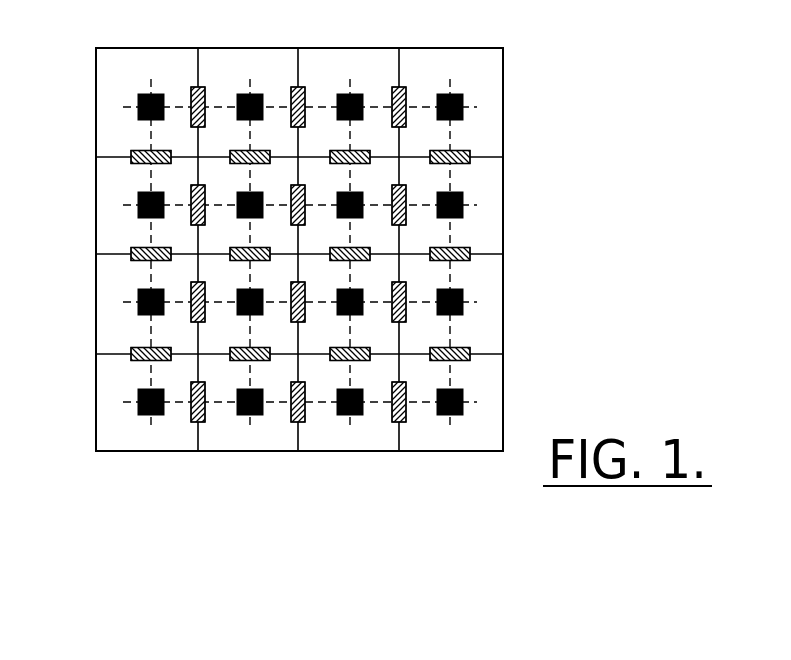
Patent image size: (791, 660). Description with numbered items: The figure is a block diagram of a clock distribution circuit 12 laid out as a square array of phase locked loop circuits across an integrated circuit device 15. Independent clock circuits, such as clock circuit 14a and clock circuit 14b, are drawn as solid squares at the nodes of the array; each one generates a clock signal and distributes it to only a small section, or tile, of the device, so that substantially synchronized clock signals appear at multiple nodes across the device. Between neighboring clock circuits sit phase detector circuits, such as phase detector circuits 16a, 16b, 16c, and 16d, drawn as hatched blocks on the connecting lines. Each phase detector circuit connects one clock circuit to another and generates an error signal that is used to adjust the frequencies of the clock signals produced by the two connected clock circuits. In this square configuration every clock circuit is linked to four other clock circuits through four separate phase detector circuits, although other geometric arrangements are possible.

The clock distribution circuit 12 is at (583, 57).
The integrated circuit device 15 is at (215, 48).
The clock circuit 14a is at (362, 192).
The clock circuit 14b is at (137, 315).
The phase detector circuit 16a is at (333, 151).
The phase detector circuit 16b is at (296, 216).
The phase detector circuit 16c is at (405, 221).
The phase detector circuit 16d is at (360, 261).